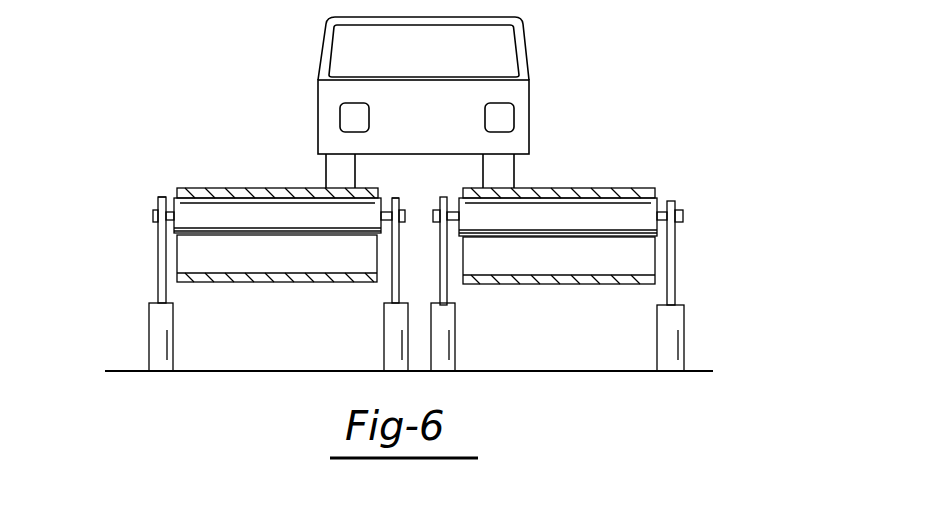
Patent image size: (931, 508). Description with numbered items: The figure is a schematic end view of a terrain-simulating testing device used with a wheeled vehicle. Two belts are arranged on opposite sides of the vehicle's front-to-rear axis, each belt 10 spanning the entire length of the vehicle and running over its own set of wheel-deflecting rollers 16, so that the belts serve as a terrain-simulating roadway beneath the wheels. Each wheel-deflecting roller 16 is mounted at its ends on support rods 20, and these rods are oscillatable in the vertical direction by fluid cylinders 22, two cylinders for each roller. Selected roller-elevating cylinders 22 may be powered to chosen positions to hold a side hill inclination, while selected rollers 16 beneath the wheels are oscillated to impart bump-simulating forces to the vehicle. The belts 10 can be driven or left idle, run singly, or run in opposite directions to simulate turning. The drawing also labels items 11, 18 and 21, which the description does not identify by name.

The belt 10 is at (224, 188).
The right roller stand 11 is at (631, 188).
The wheel-deflecting roller 16 is at (263, 208).
The ball bushing 18 is at (153, 216).
The support rod 20 is at (158, 264).
The post top 21 is at (158, 196).
The fluid cylinder 22 is at (149, 345).